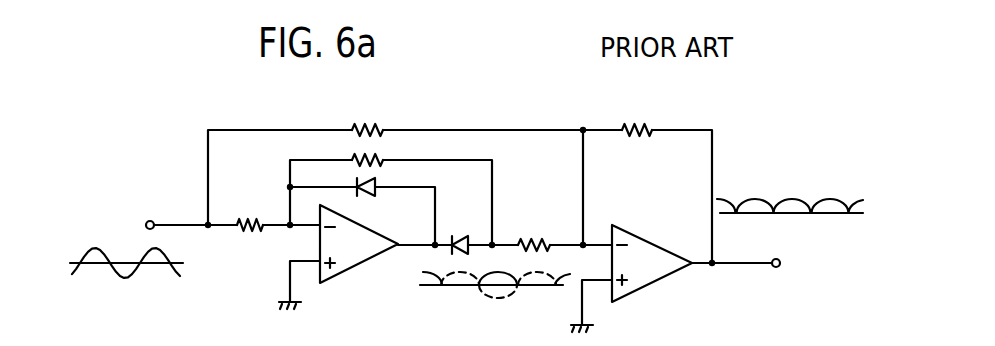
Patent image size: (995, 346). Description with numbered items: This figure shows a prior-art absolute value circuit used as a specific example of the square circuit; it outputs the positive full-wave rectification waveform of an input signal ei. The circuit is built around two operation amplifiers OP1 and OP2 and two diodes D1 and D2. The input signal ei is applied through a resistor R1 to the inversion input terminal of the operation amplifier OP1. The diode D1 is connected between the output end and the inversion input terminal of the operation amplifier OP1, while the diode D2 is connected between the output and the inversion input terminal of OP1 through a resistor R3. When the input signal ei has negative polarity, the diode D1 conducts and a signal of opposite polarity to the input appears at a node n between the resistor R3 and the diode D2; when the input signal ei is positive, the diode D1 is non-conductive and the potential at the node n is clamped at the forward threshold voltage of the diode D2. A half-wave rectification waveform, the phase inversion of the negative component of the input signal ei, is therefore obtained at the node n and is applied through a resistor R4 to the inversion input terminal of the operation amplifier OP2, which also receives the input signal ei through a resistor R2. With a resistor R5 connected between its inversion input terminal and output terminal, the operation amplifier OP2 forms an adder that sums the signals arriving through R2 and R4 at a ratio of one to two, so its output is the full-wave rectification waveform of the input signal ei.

The input signal ei is at (126, 246).
The resistor R1 is at (251, 212).
The resistor R2 is at (372, 121).
The resistor R3 is at (372, 151).
The resistor R4 is at (534, 231).
The resistor R5 is at (637, 119).
The diode D1 is at (372, 174).
The diode D2 is at (463, 233).
The operation amplifier OP1 is at (360, 263).
The operation amplifier OP2 is at (645, 285).
The node n is at (492, 243).